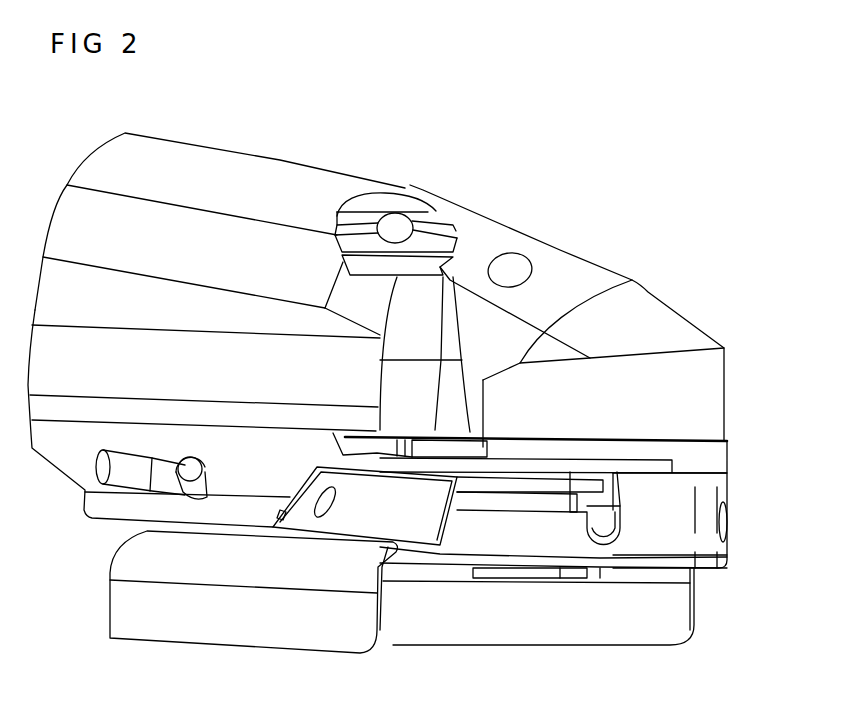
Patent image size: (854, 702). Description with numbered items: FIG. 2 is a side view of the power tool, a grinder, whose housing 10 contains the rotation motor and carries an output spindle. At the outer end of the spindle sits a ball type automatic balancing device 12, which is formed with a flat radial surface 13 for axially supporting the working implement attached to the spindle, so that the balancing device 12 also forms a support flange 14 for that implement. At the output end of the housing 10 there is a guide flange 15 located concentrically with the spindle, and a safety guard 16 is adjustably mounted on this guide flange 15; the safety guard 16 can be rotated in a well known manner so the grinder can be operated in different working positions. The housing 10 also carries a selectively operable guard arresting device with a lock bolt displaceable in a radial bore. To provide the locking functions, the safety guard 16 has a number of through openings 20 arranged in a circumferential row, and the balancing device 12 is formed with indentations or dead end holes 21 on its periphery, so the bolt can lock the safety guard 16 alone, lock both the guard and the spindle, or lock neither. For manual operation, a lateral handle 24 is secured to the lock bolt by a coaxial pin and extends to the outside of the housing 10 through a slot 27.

The housing 10 is at (333, 178).
The ball type automatic balancing device 12 is at (730, 500).
The flat radial surface 13 is at (703, 570).
The support flange 14 is at (538, 545).
The guide flange 15 is at (510, 480).
The safety guard 16 is at (297, 640).
The through openings 20 is at (337, 507).
The indentations or dead end holes 21 is at (717, 530).
The lateral handle 24 is at (210, 480).
The slot 27 is at (160, 467).